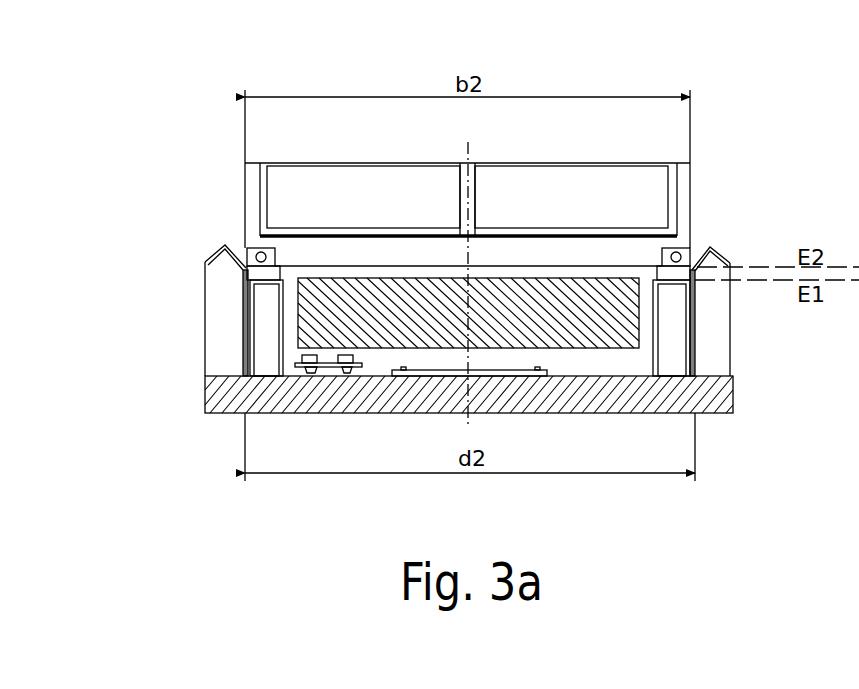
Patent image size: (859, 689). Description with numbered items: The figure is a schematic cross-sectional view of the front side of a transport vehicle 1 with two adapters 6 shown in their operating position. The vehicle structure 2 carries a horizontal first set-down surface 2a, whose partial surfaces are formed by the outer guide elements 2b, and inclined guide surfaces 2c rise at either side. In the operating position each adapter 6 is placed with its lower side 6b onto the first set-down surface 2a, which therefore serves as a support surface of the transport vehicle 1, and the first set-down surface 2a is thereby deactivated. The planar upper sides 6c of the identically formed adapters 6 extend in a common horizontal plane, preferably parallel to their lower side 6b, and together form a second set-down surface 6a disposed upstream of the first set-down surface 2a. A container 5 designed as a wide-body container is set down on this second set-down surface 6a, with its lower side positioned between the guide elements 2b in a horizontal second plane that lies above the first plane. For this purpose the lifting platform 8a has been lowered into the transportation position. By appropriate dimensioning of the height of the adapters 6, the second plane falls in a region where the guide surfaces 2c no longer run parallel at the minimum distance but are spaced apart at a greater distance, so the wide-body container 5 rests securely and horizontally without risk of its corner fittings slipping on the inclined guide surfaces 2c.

The transport vehicle 1 is at (488, 279).
The vehicle frame 2 is at (708, 395).
The first set-down surface 2a is at (478, 259).
The outer guide elements 2b is at (795, 349).
The guide surfaces 2c is at (475, 229).
The container 5 is at (467, 147).
The adapters 6 is at (468, 398).
The second set-down surface 6a is at (196, 191).
The lower side of adapter 6b is at (733, 192).
The upper sides of adapters 6c is at (194, 203).
The lifting platform 8a is at (467, 404).